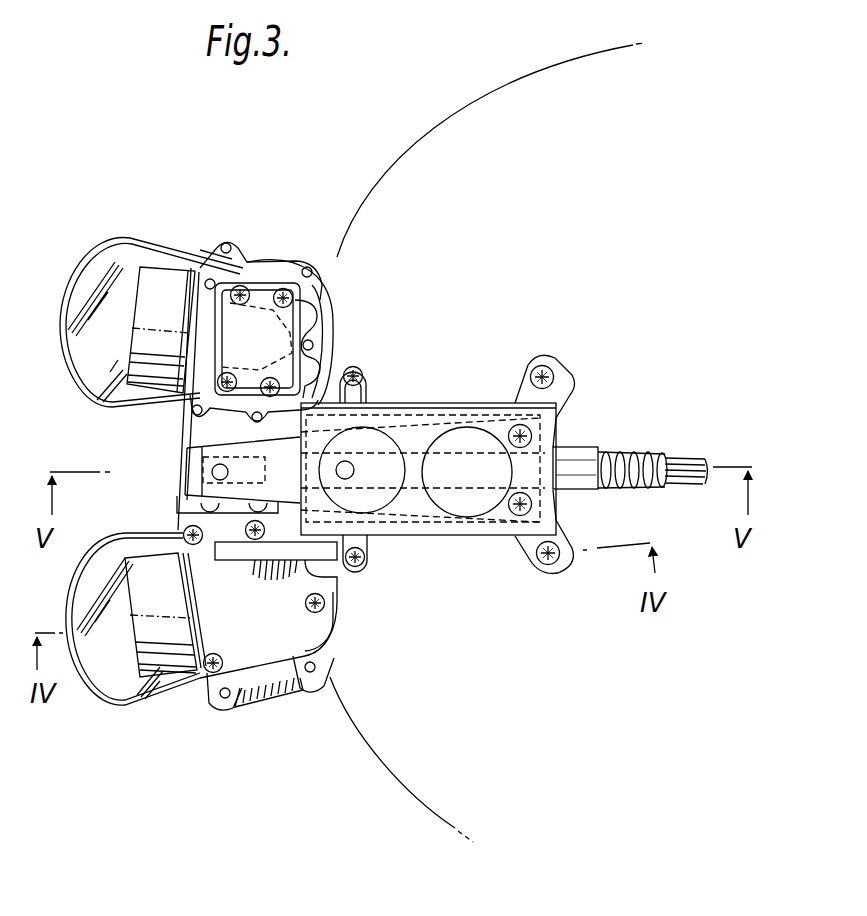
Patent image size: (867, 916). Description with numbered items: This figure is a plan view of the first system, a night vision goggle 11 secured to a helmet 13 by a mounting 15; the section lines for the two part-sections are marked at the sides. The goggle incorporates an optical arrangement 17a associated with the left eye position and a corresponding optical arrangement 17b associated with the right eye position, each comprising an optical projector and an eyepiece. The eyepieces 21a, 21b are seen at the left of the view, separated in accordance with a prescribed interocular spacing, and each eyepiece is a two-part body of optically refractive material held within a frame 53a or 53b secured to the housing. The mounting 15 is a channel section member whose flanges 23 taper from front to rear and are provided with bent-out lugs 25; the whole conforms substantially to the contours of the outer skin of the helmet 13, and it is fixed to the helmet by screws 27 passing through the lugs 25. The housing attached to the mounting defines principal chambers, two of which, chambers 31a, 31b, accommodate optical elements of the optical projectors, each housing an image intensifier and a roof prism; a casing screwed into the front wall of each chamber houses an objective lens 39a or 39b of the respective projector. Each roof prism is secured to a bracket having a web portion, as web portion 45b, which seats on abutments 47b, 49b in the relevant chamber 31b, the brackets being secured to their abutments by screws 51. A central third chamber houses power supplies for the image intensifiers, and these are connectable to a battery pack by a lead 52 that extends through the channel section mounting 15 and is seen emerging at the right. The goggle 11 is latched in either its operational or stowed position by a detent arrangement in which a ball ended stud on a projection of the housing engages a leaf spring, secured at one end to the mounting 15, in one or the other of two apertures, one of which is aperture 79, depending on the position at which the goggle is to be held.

The night vision goggle 11 is at (74, 541).
The helmet 13 is at (557, 62).
The mounting 15 is at (398, 550).
The optical arrangement 17a is at (141, 720).
The optical arrangement 17b is at (162, 230).
The eyepiece 21a is at (100, 668).
The eyepiece 21b is at (87, 378).
The flanges 23 is at (455, 536).
The bent-out lugs 25 is at (548, 562).
The screws 27 is at (560, 560).
The chamber 31a is at (290, 648).
The chamber 31b is at (293, 335).
The objective lens 39a is at (175, 652).
The objective lens 39b is at (173, 280).
The web portion 45b is at (233, 337).
The abutment 47b is at (305, 322).
The abutment 49b is at (297, 383).
The screws 51 is at (280, 288).
The lead 52 is at (690, 458).
The frame 53a is at (193, 685).
The frame 53b is at (68, 278).
The aperture 79 is at (350, 465).